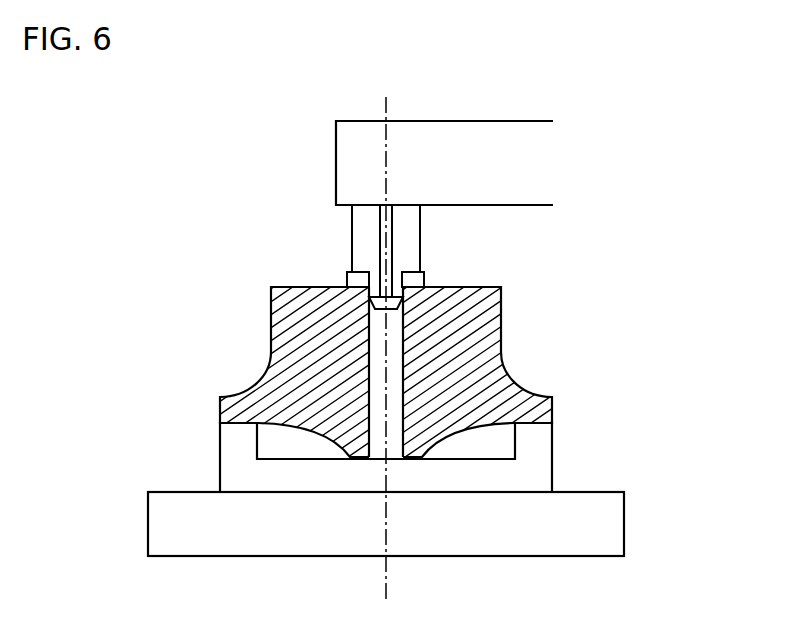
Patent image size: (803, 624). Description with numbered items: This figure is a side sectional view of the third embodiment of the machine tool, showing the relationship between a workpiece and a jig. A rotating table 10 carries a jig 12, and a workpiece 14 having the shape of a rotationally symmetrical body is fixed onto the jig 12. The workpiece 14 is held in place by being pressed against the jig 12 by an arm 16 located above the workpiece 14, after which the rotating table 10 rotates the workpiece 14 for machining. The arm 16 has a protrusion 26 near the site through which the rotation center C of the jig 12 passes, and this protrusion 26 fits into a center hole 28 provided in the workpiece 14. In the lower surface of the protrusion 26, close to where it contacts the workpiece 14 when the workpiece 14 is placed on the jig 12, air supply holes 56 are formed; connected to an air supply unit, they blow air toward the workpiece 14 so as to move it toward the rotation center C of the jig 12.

The rotating table 10 is at (612, 522).
The jig 12 is at (533, 474).
The workpiece 14 is at (290, 322).
The arm 16 is at (452, 121).
The protrusion 26 is at (377, 290).
The center hole 28 is at (377, 370).
The air supply holes 56 is at (400, 292).
The rotation center C is at (381, 243).